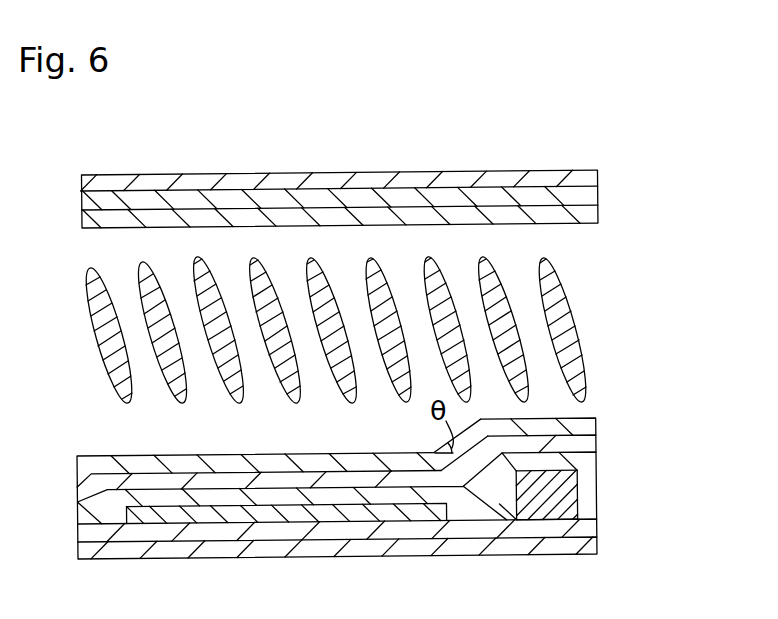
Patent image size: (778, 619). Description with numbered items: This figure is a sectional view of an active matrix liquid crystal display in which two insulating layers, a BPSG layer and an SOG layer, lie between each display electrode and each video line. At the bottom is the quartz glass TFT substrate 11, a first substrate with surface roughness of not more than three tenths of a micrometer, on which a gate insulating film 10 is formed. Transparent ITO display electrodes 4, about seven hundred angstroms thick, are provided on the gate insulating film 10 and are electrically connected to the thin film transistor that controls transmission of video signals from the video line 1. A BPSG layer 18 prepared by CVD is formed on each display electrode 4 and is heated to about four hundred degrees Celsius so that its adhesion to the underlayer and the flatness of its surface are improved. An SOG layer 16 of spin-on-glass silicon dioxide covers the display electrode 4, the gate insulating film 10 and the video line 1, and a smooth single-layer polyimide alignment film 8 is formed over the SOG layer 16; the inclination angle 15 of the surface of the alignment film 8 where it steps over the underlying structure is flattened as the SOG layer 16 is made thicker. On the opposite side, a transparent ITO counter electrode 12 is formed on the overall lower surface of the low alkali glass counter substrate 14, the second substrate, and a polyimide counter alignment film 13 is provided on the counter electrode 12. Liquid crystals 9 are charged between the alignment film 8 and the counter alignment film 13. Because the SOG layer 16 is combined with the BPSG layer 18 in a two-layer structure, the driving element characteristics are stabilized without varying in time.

The counter substrate 14 is at (102, 186).
The counter electrode 12 is at (334, 197).
The counter alignment film 13 is at (598, 210).
The liquid crystals 9 is at (560, 283).
The alignment film 8 is at (597, 418).
The SOG layer 16 is at (593, 441).
The inclination angle 15 is at (437, 451).
The video line 1 is at (582, 466).
The BPSG layer 18 is at (597, 497).
The display electrode 4 is at (213, 518).
The gate insulating film 10 is at (301, 530).
The TFT substrate 11 is at (467, 548).